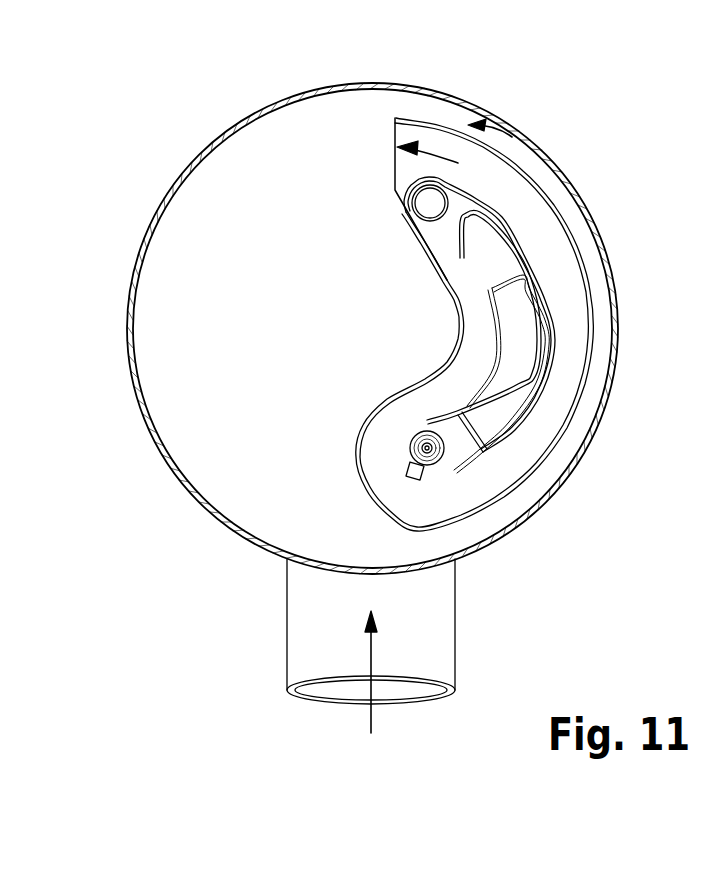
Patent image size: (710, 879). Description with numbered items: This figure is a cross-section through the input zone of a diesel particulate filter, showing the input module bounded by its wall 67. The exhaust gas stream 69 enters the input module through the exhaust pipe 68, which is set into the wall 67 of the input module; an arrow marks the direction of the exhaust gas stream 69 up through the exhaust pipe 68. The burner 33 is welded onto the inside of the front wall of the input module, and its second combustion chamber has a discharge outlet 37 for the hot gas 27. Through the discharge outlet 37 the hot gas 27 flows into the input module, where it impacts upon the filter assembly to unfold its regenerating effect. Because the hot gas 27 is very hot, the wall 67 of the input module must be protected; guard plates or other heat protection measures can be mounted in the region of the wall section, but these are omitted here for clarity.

The hot gas 27 is at (442, 155).
The burner 33 is at (512, 137).
The discharge outlet 37 is at (395, 140).
The wall 67 is at (402, 328).
The exhaust pipe 68 is at (438, 625).
The exhaust gas stream 69 is at (370, 717).